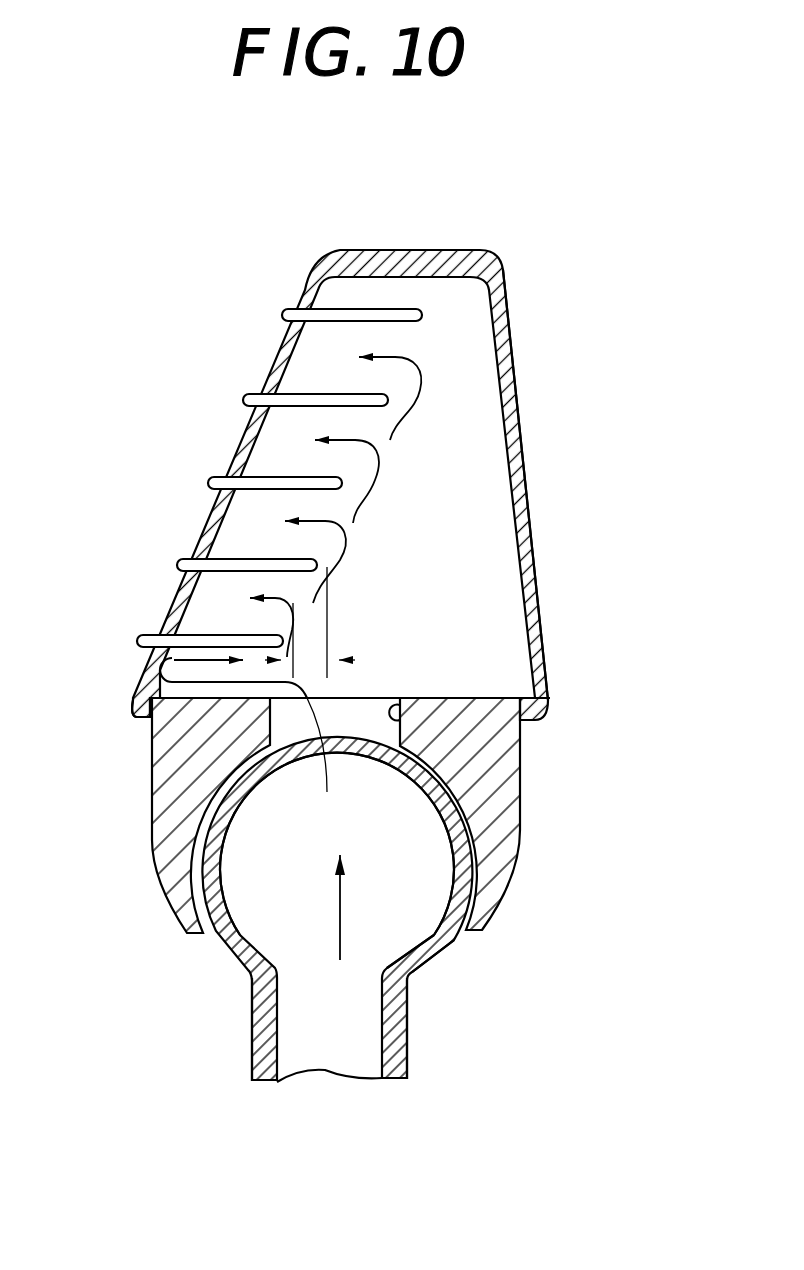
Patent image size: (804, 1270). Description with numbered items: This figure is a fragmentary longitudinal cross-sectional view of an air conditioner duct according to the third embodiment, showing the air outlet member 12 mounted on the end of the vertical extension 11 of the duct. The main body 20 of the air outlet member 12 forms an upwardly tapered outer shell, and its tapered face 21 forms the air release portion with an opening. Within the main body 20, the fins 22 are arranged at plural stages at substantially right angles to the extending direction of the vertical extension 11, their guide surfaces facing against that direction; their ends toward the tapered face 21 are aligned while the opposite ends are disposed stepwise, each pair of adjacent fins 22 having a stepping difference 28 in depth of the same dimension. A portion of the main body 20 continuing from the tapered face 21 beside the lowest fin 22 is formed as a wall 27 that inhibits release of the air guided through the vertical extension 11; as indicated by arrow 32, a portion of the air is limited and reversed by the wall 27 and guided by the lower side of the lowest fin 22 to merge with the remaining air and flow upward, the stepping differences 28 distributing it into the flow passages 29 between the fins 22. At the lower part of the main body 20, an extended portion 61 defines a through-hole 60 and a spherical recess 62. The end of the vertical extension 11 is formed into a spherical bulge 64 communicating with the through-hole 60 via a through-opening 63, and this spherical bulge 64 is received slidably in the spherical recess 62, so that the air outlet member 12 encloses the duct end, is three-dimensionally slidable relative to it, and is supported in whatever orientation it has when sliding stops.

The vertical extension 11 is at (407, 1060).
The air outlet member 12 is at (518, 347).
The main body 20 is at (530, 503).
The tapered face 21 is at (300, 297).
The fins 22 is at (306, 393).
The wall 27 is at (135, 712).
The stepping difference 28 is at (340, 682).
The flow passage 29 is at (352, 558).
The arrow 32 is at (170, 660).
The through-hole 60 is at (407, 722).
The extended portion 61 is at (522, 774).
The spherical recess 62 is at (472, 835).
The through-opening 63 is at (280, 762).
The spherical bulge 64 is at (443, 950).